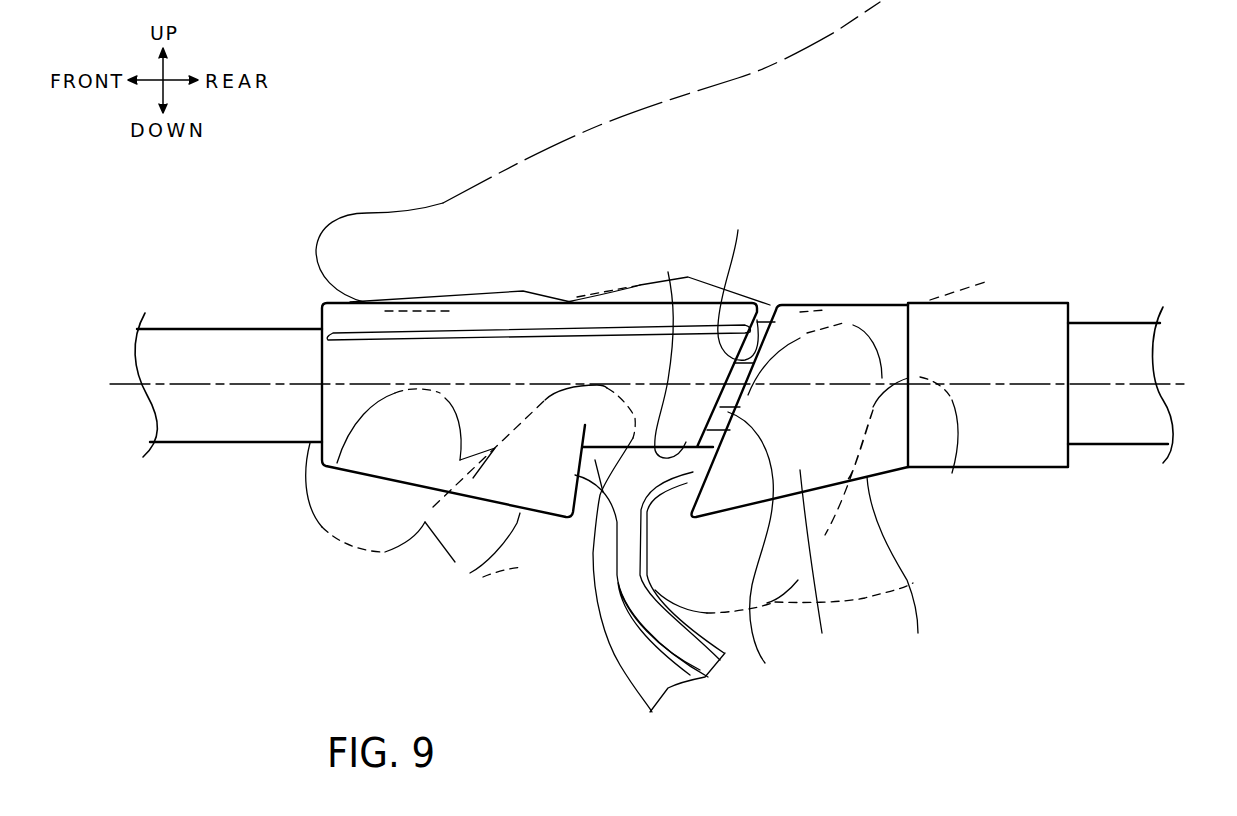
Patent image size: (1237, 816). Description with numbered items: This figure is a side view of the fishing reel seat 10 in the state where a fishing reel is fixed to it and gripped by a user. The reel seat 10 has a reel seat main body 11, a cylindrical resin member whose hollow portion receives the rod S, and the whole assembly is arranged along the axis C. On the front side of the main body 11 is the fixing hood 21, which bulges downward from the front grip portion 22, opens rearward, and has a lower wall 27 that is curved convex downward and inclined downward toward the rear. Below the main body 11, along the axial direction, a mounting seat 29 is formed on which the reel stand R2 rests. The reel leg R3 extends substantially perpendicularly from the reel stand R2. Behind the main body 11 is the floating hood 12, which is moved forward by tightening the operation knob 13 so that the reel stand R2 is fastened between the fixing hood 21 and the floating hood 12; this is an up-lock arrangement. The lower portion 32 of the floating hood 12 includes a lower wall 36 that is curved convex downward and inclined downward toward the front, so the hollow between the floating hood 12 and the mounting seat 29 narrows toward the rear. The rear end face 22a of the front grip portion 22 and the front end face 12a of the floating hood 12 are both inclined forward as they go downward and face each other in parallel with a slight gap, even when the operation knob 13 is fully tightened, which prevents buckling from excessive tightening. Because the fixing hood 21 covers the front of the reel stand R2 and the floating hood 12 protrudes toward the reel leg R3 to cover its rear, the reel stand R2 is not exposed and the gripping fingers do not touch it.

The rod S is at (217, 340).
The axis C is at (664, 384).
The fishing reel seat 10 is at (580, 255).
The reel seat main body 11 is at (548, 385).
The front grip portion 22 is at (485, 350).
The floating hood 12 is at (827, 335).
The front end face 12a is at (741, 282).
The operation knob 13 is at (988, 333).
The mounting seat 29 is at (666, 352).
The fixing hood 21 is at (471, 509).
The lower wall 27 is at (458, 568).
The reel stand R2 is at (593, 535).
The reel leg R3 is at (628, 657).
The rear end face 22a is at (725, 554).
The lower portion 32 is at (840, 568).
The lower wall 36 is at (900, 571).